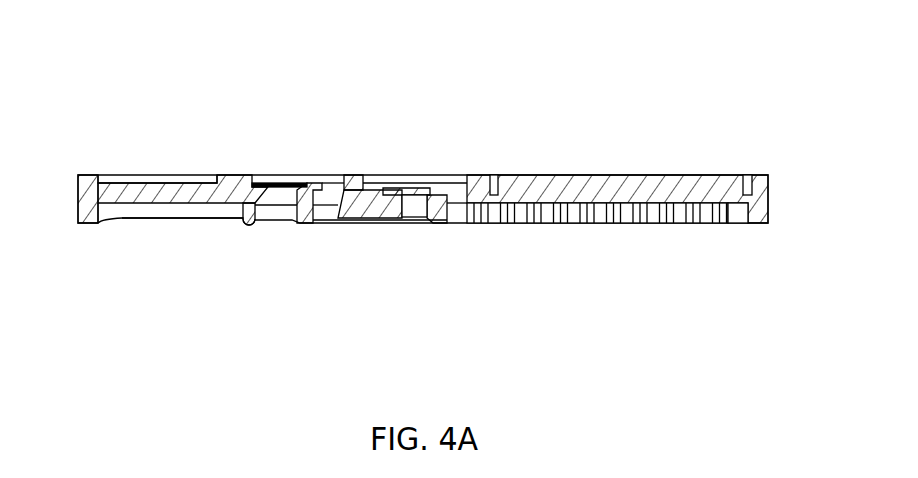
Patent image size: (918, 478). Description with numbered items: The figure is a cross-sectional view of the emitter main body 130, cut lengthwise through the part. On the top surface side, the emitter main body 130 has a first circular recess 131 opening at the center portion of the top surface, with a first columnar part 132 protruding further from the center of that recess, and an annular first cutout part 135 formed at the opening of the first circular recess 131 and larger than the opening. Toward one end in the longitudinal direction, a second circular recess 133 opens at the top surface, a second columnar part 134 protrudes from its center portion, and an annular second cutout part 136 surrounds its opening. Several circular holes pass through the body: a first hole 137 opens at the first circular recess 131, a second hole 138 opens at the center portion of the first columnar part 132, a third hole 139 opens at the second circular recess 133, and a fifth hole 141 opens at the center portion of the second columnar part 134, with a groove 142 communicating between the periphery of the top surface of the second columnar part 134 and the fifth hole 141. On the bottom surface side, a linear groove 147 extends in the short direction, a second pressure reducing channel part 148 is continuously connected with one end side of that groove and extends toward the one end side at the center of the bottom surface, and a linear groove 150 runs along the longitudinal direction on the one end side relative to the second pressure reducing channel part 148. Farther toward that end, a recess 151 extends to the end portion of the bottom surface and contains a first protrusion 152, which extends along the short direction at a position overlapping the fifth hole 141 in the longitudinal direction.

The emitter main body 130 is at (752, 111).
The first circular recess 131 is at (363, 177).
The first columnar part 132 is at (432, 177).
The second circular recess 133 is at (318, 177).
The second columnar part 134 is at (245, 177).
The first cutout part 135 is at (458, 177).
The second cutout part 136 is at (230, 177).
The first hole 137 is at (460, 208).
The second hole 138 is at (422, 223).
The third hole 139 is at (328, 223).
The fifth hole 141 is at (285, 223).
The groove 142 is at (277, 177).
The linear groove 147 is at (745, 223).
The second pressure reducing channel part 148 is at (597, 223).
The linear groove 150 is at (370, 223).
The recess 151 is at (172, 223).
The first protrusion 152 is at (248, 225).